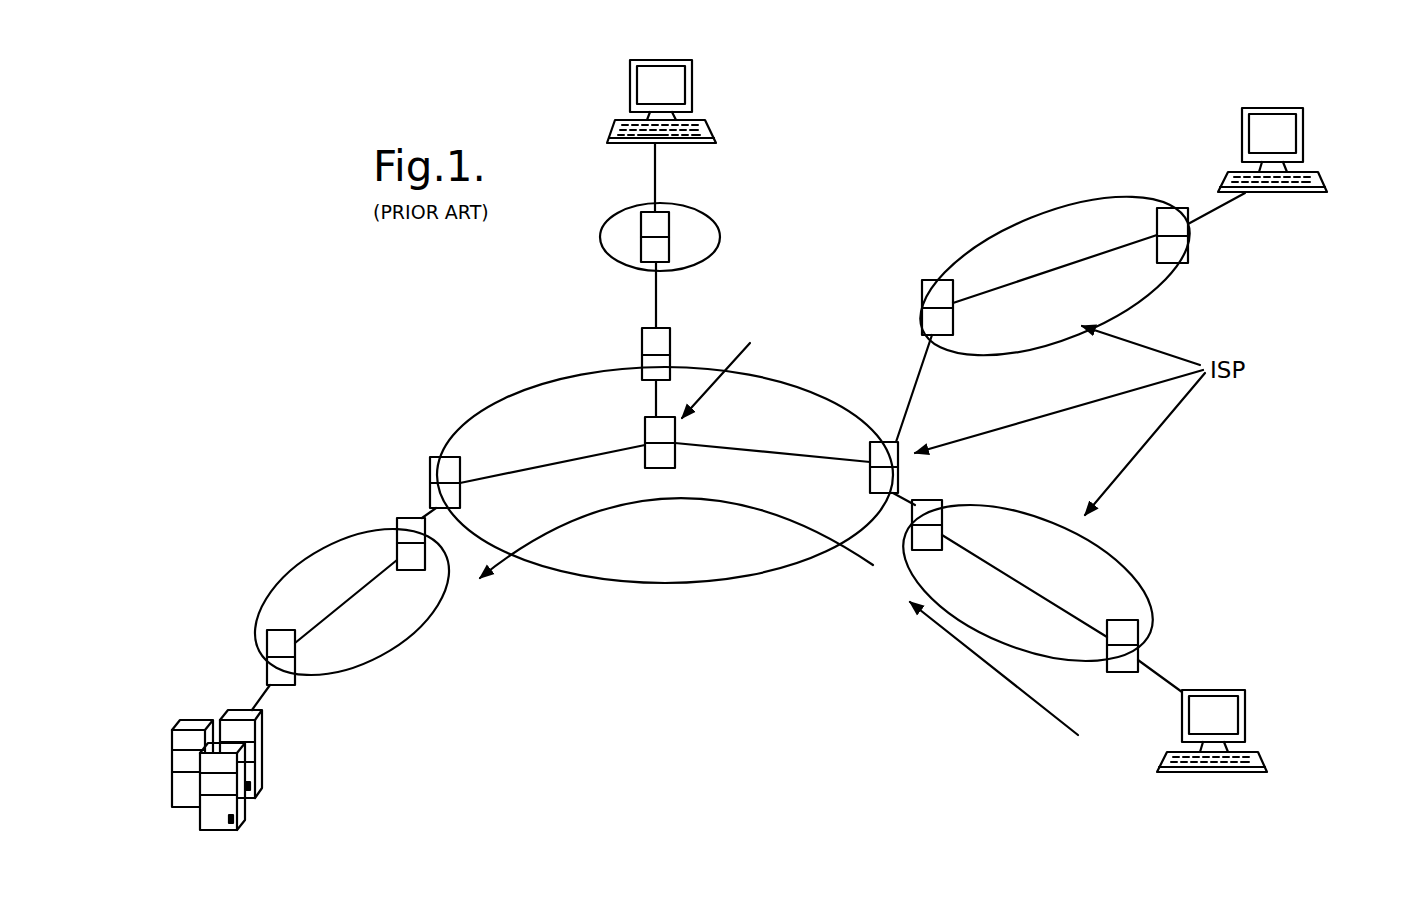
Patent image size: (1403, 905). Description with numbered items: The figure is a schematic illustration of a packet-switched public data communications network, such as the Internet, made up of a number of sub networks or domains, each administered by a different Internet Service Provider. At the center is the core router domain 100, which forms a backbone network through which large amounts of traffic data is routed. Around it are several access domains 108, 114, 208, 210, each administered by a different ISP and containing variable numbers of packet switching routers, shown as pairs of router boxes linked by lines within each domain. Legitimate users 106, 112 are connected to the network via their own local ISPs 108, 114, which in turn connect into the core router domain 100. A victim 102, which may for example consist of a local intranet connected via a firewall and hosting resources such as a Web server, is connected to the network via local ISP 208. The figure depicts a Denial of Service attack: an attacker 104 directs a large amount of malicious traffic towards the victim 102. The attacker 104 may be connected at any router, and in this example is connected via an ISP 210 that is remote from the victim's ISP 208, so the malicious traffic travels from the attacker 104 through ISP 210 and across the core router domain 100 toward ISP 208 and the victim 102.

The core router domain 100 is at (538, 405).
The victim 102 is at (180, 760).
The attacker 104 is at (1225, 690).
The legitimate user 106 is at (628, 78).
The access domain (local ISP) 108 is at (705, 223).
The legitimate user 112 is at (1305, 124).
The access domain (local ISP) 114 is at (1028, 228).
The local ISP (access domain) 208 is at (285, 585).
The ISP (access domain) 210 is at (1105, 575).